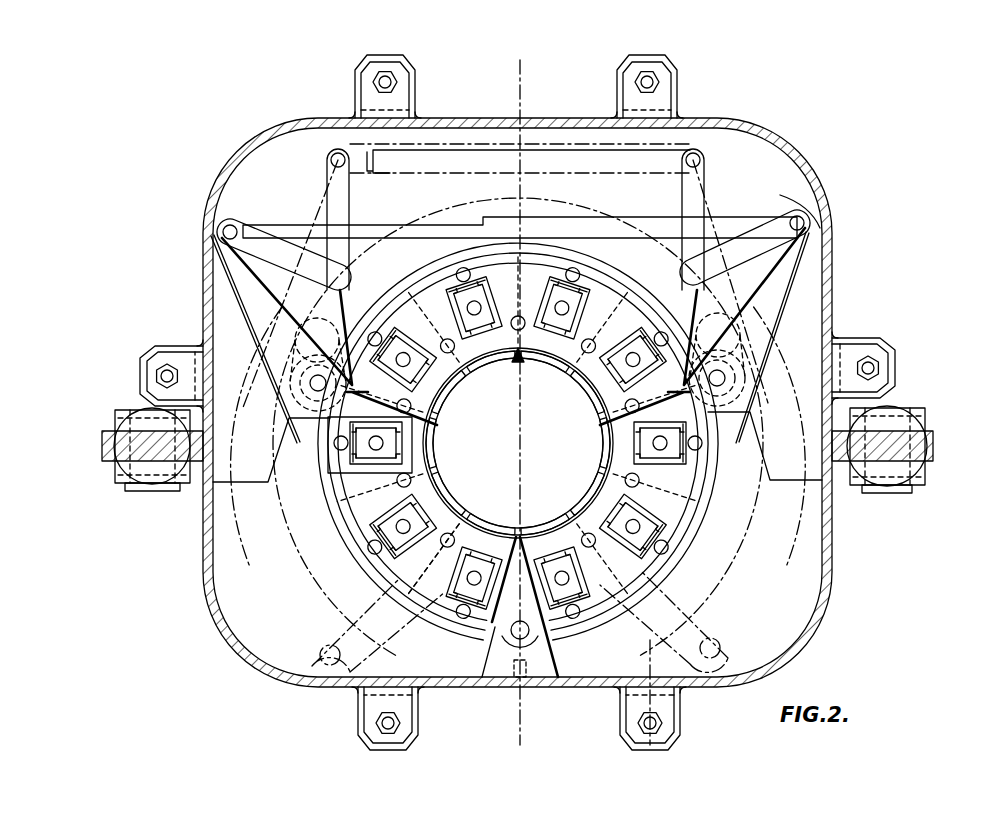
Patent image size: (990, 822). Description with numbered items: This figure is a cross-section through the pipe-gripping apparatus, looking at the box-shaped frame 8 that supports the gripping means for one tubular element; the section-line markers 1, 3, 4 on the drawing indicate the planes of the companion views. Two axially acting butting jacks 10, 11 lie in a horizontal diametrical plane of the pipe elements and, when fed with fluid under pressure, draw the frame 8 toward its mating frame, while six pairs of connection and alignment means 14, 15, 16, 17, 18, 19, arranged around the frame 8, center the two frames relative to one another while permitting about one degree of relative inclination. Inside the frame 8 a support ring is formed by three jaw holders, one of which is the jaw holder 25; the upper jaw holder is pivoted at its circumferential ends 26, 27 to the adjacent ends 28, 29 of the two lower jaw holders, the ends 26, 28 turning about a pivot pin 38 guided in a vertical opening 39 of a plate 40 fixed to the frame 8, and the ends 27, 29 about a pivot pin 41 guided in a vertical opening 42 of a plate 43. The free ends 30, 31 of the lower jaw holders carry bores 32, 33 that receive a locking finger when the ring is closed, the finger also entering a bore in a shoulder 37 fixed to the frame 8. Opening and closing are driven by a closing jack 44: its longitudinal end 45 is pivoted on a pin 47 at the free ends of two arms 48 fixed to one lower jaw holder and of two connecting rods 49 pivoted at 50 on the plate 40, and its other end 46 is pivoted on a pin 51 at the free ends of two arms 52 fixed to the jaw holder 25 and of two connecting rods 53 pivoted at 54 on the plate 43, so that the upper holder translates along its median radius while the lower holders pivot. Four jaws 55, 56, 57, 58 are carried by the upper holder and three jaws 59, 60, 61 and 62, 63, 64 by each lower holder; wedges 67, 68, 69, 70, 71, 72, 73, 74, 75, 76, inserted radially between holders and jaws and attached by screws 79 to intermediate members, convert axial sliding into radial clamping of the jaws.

The section line I-I 1 is at (533, 67).
The section line III 3 is at (147, 512).
The section line IV-IV 4 is at (650, 652).
The frame 8 is at (268, 140).
The butting jack 10 is at (118, 462).
The butting jack 11 is at (922, 462).
The connection and alignment means 14 is at (145, 362).
The connection and alignment means 15 is at (362, 92).
The connection and alignment means 16 is at (660, 97).
The connection and alignment means 17 is at (890, 368).
The connection and alignment means 18 is at (676, 710).
The connection and alignment means 19 is at (358, 710).
The jaw holder 25 is at (688, 547).
The circumferential end of jaw holder 26 is at (290, 355).
The circumferential end of jaw holder 27 is at (770, 315).
The circumferential end of jaw holder 28 is at (328, 470).
The circumferential end of jaw holder 29 is at (772, 410).
The free end of jaw holder 30 is at (478, 636).
The free end of jaw holder 31 is at (578, 628).
The bore 32 is at (513, 640).
The bore 33 is at (527, 680).
The shoulder 37 is at (545, 668).
The pivot pin 38 is at (300, 395).
The vertical opening 39 is at (310, 383).
The plate 40 is at (232, 485).
The pivot pin 41 is at (726, 378).
The vertical opening 42 is at (800, 322).
The plate 43 is at (808, 480).
The closing jack 44 is at (655, 220).
The longitudinal end of jack 45 is at (262, 228).
The other end of jack 46 is at (805, 198).
The pin 47 is at (222, 228).
The arms 48 is at (250, 297).
The connecting rods 49 is at (232, 252).
The pivot 50 is at (340, 270).
The pin 51 is at (810, 220).
The arms 52 is at (770, 330).
The connecting rods 53 is at (740, 245).
The pivot 54 is at (686, 268).
The jaw 55 is at (447, 392).
The jaw 56 is at (493, 363).
The jaw 57 is at (543, 363).
The jaw 58 is at (589, 395).
The jaw 59 is at (433, 446).
The jaw 60 is at (449, 505).
The jaw 61 is at (492, 524).
The jaw 62 is at (543, 524).
The jaw 63 is at (588, 502).
The jaw 64 is at (603, 446).
The wedge 67 is at (408, 350).
The wedge 68 is at (480, 302).
The wedge 69 is at (556, 300).
The wedge 70 is at (622, 350).
The wedge 71 is at (378, 452).
The wedge 72 is at (420, 568).
The wedge 73 is at (470, 586).
The wedge 74 is at (572, 582).
The wedge 75 is at (645, 530).
The wedge 76 is at (661, 455).
The screws 79 is at (395, 522).